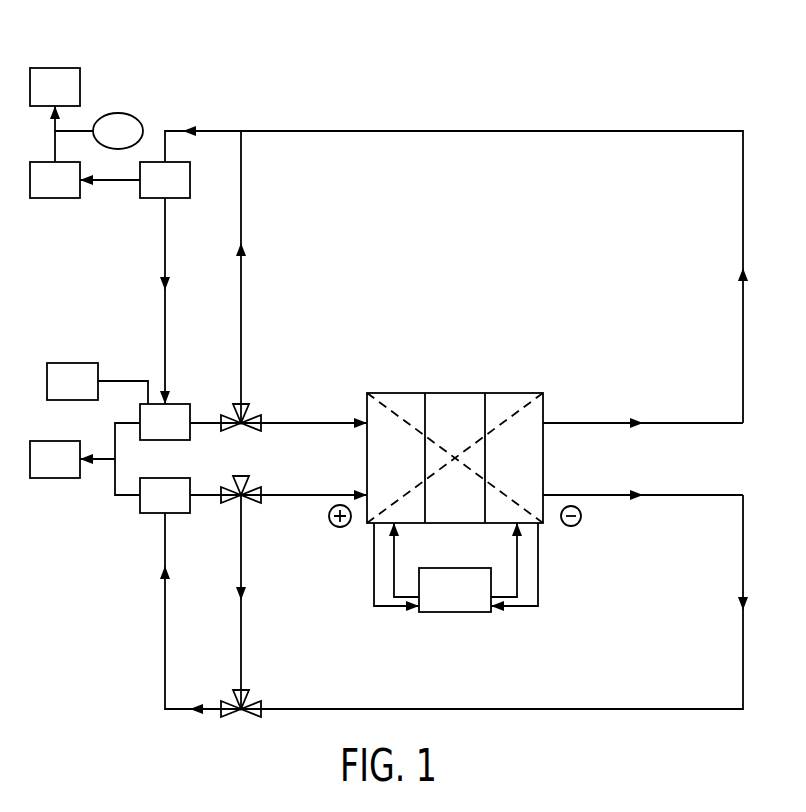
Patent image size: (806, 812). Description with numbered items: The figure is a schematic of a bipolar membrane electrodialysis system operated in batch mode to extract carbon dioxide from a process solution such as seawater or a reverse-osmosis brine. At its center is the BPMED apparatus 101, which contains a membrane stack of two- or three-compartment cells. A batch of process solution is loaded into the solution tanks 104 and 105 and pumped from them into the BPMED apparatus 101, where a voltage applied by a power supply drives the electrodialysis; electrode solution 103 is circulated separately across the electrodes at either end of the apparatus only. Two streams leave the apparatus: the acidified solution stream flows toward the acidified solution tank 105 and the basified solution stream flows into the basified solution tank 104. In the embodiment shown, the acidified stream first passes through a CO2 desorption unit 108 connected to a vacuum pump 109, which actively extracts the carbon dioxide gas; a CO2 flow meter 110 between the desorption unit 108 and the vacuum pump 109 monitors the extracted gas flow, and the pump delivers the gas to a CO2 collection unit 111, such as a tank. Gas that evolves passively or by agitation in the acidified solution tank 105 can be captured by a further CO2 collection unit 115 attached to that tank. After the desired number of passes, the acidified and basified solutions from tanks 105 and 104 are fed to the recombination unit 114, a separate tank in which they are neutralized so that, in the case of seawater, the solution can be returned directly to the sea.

The BPMED apparatus 101 is at (455, 408).
The electrode solution 103 is at (451, 612).
The basified solution tank 104 is at (148, 513).
The acidified solution tank 105 is at (180, 404).
The CO2 desorption unit 108 is at (152, 198).
The vacuum pump 109 is at (55, 198).
The CO2 flow meter 110 is at (116, 113).
The CO2 collection unit 111 is at (53, 68).
The recombination unit 114 is at (55, 478).
The CO2 collection unit 115 is at (70, 363).